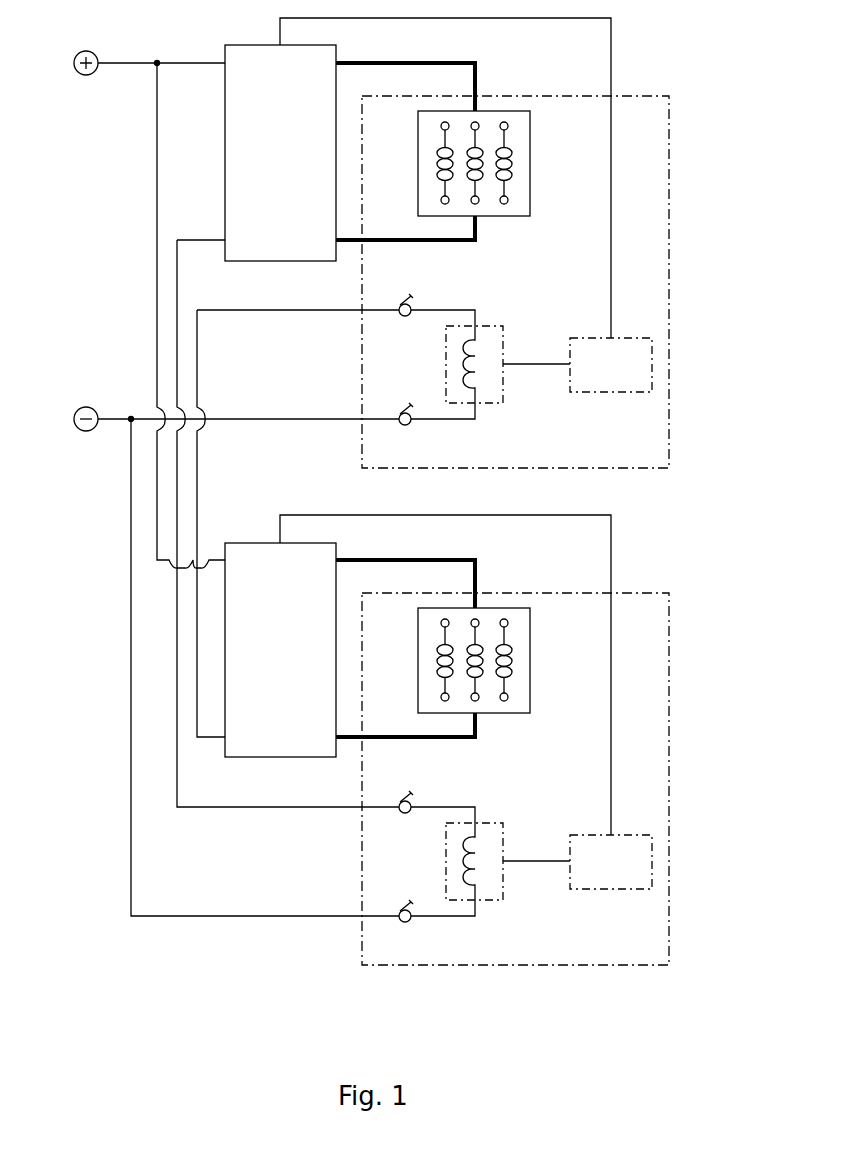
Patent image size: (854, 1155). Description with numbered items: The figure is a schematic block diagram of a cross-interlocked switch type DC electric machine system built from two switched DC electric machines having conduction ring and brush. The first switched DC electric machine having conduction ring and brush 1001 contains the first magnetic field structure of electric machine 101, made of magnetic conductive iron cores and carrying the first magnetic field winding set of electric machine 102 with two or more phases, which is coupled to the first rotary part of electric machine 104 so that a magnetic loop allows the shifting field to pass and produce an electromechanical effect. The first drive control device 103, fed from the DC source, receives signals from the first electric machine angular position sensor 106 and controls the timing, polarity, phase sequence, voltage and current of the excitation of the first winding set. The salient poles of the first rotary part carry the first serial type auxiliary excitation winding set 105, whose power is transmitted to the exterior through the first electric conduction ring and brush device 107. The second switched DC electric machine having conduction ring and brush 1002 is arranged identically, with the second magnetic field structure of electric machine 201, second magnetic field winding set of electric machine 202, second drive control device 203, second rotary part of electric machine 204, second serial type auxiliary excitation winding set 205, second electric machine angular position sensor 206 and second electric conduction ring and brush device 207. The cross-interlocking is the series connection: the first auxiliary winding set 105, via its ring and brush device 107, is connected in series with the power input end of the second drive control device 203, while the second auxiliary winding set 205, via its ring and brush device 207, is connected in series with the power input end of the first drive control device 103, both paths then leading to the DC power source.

The first magnetic field structure of electric machine 101 is at (531, 188).
The first magnetic field winding set of electric machine 102 is at (440, 163).
The first drive control device 103 is at (251, 45).
The first rotary part of electric machine 104 is at (503, 347).
The first serial type auxiliary excitation winding set 105 is at (485, 383).
The first electric machine angular position sensor 106 is at (625, 392).
The first electric conduction ring and brush device 107 is at (417, 303).
The first switched DC electric machine having conduction ring and brush 1001 is at (669, 155).
The second magnetic field structure of electric machine 201 is at (506, 660).
The second magnetic field winding set of electric machine 202 is at (442, 660).
The second drive control device 203 is at (280, 605).
The second rotary part of electric machine 204 is at (508, 840).
The second serial type auxiliary excitation winding set 205 is at (504, 880).
The second electric machine angular position sensor 206 is at (607, 886).
The second electric conduction ring and brush device 207 is at (442, 855).
The second switched DC electric machine having conduction ring and brush 1002 is at (550, 765).